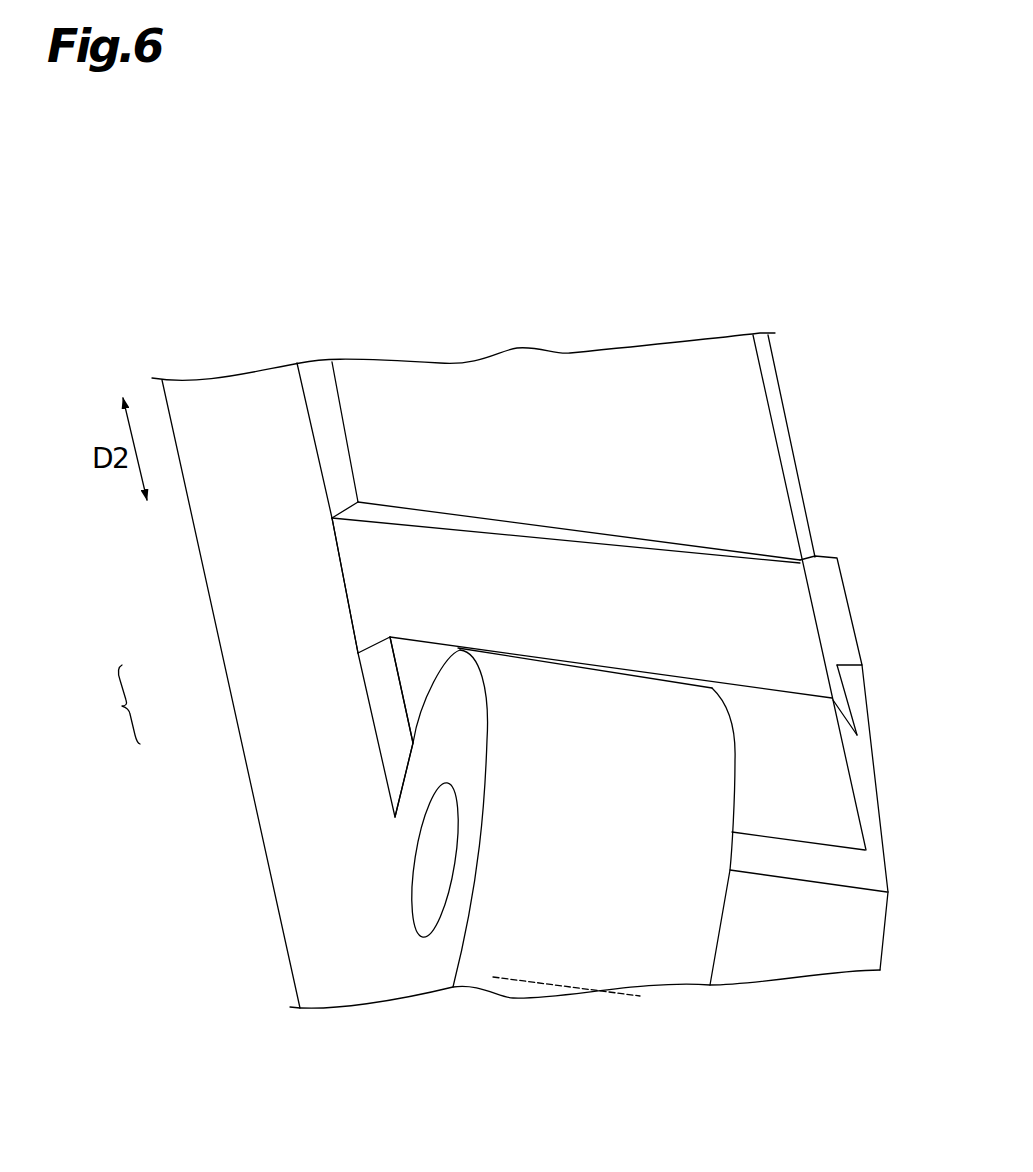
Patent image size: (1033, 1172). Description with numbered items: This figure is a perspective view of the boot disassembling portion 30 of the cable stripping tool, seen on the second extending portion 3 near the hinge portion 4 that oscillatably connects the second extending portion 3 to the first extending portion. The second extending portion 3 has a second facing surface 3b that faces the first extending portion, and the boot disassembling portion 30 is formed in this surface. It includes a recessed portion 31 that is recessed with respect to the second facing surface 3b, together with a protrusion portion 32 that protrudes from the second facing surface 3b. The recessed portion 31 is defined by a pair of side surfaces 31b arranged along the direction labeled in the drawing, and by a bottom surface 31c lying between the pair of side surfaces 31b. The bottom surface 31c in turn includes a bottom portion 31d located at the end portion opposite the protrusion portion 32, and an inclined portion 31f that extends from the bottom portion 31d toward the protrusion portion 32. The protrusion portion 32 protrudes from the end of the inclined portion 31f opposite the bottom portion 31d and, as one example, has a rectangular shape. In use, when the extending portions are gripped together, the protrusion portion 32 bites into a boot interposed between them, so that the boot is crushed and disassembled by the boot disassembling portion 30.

The second extending portion 3 is at (232, 553).
The second facing surface 3b is at (742, 408).
The boot disassembling portion 30 is at (560, 517).
The recessed portion 31 is at (482, 575).
The side surfaces 31b is at (378, 640).
The bottom surface 31c is at (106, 704).
The bottom portion 31d is at (357, 562).
The inclined portion 31f is at (386, 599).
The protrusion portion 32 is at (838, 595).
The hinge portion 4 is at (430, 865).